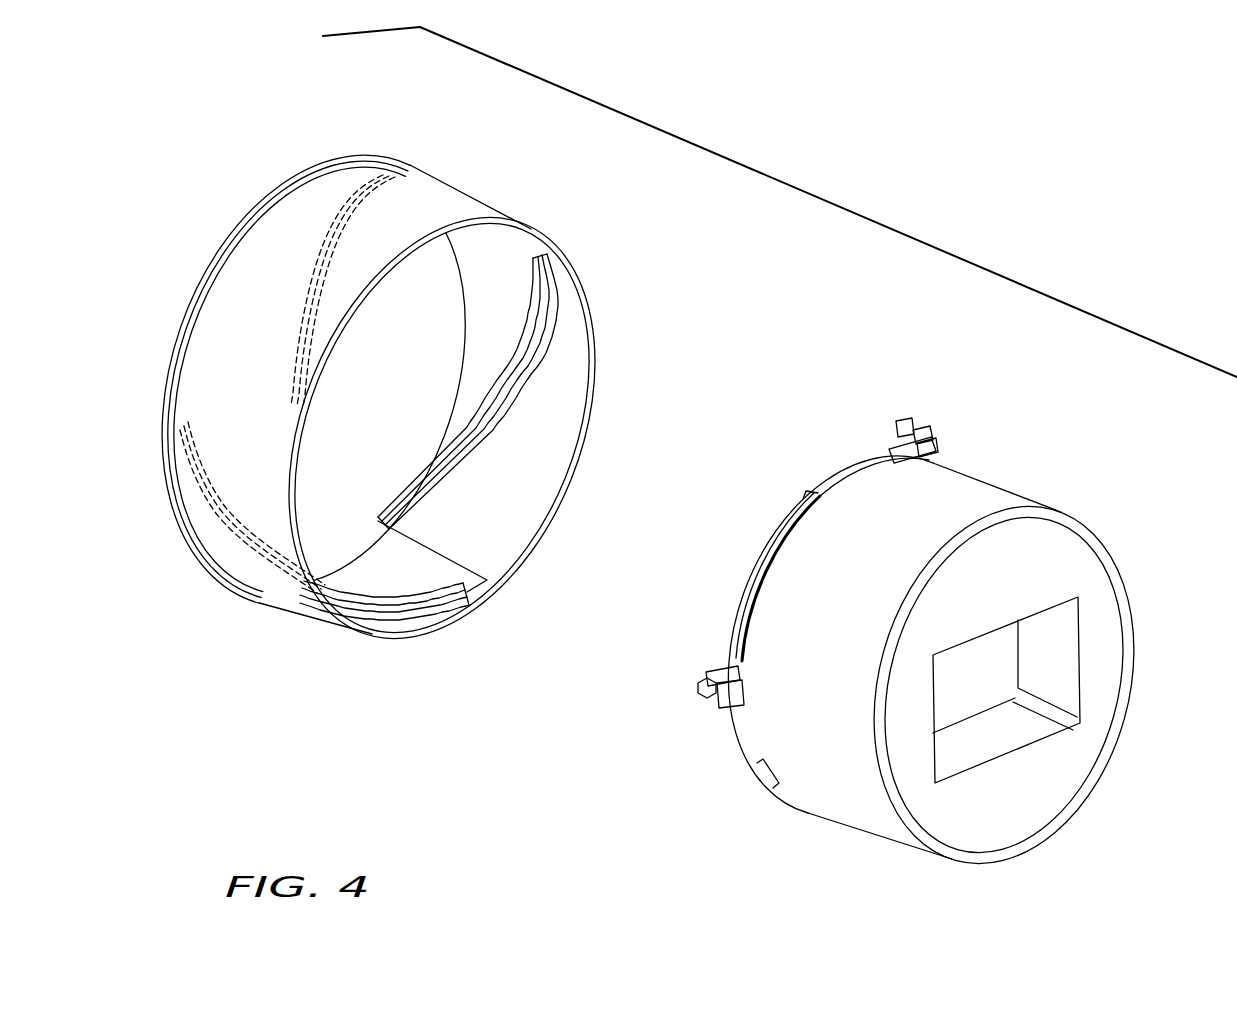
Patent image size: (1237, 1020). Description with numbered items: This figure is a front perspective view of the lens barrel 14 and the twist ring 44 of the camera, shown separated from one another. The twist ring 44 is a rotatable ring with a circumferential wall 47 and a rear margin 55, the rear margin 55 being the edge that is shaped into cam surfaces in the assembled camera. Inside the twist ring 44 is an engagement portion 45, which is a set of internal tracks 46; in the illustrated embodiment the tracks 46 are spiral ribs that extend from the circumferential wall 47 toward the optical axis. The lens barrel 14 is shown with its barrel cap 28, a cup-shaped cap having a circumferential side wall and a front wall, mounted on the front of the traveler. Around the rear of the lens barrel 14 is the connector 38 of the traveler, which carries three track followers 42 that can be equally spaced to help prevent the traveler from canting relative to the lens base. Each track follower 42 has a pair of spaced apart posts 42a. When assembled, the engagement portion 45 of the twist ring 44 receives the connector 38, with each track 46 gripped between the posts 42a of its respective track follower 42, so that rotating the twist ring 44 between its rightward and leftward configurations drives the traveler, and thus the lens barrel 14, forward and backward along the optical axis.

The lens barrel 14 is at (893, 602).
The barrel cap 28 is at (1038, 768).
The connector 38 is at (786, 580).
The track follower 42 is at (784, 613).
The post 42a is at (707, 698).
The twist ring 44 is at (405, 414).
The engagement portion 45 is at (429, 437).
The internal track 46 is at (365, 599).
The circumferential wall 47 is at (528, 512).
The rear margin 55 is at (243, 229).